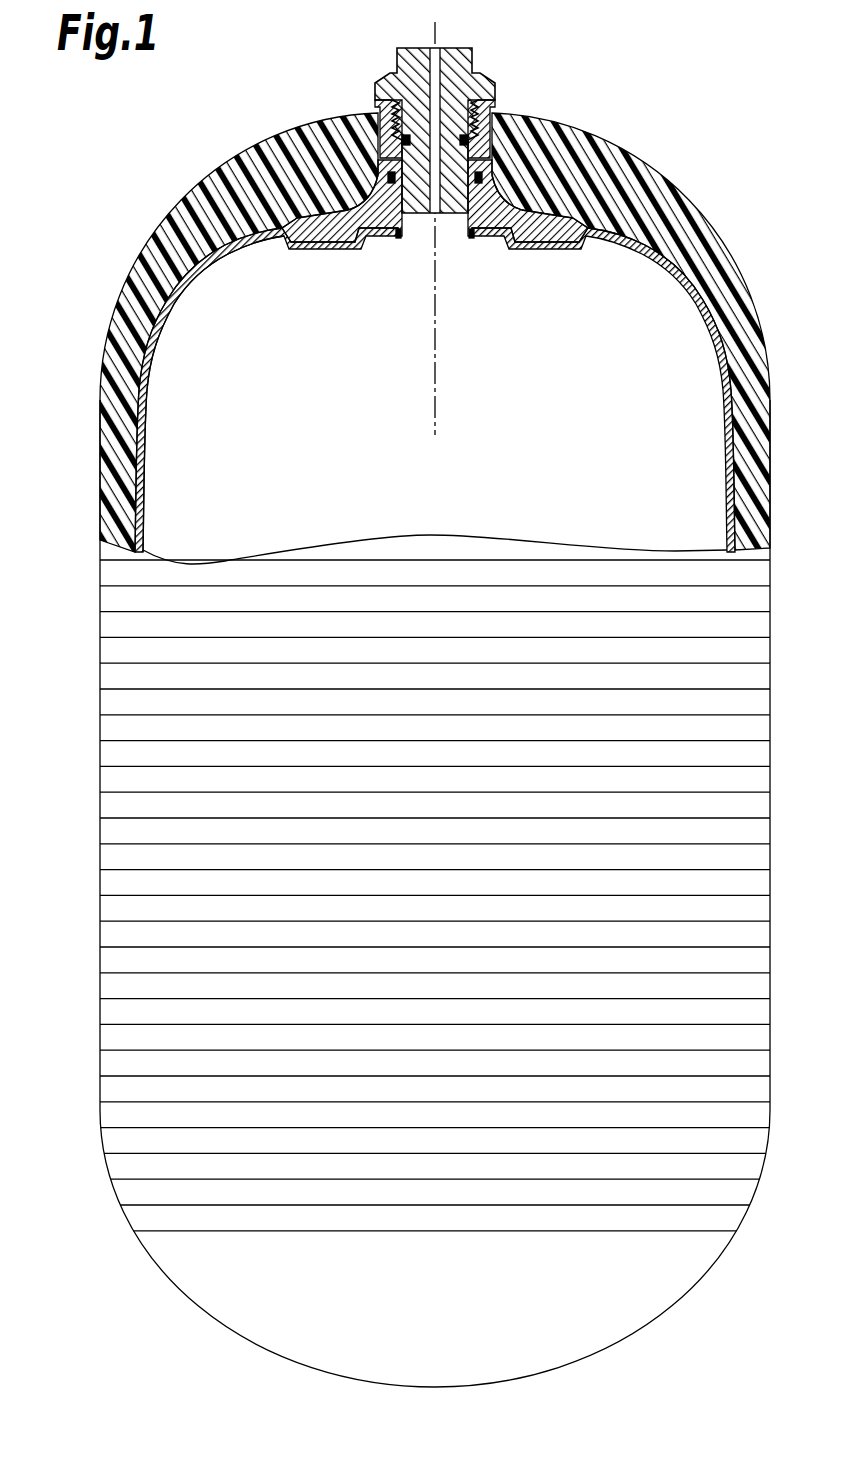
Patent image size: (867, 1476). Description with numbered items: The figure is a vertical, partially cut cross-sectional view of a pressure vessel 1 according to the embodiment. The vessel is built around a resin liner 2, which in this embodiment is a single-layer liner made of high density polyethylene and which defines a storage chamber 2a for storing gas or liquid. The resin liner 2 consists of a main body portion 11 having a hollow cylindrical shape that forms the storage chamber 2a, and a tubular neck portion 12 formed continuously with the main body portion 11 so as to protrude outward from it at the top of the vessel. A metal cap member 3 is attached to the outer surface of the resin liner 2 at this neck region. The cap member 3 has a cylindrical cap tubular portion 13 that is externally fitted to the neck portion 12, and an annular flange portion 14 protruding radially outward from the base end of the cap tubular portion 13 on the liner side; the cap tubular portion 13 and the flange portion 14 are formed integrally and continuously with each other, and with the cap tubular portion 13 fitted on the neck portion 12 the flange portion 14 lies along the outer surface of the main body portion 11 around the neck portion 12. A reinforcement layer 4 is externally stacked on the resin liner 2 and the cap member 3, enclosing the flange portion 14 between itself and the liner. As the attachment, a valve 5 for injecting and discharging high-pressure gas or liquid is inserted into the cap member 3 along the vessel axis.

The pressure vessel 1 is at (716, 104).
The resin liner 2 is at (692, 257).
The storage chamber 2a is at (511, 457).
The cap member 3 is at (492, 120).
The reinforcement layer 4 is at (578, 132).
The valve 5 is at (455, 49).
The main body portion 11 is at (207, 267).
The neck portion 12 is at (410, 238).
The cap tubular portion 13 is at (376, 135).
The flange portion 14 is at (333, 219).